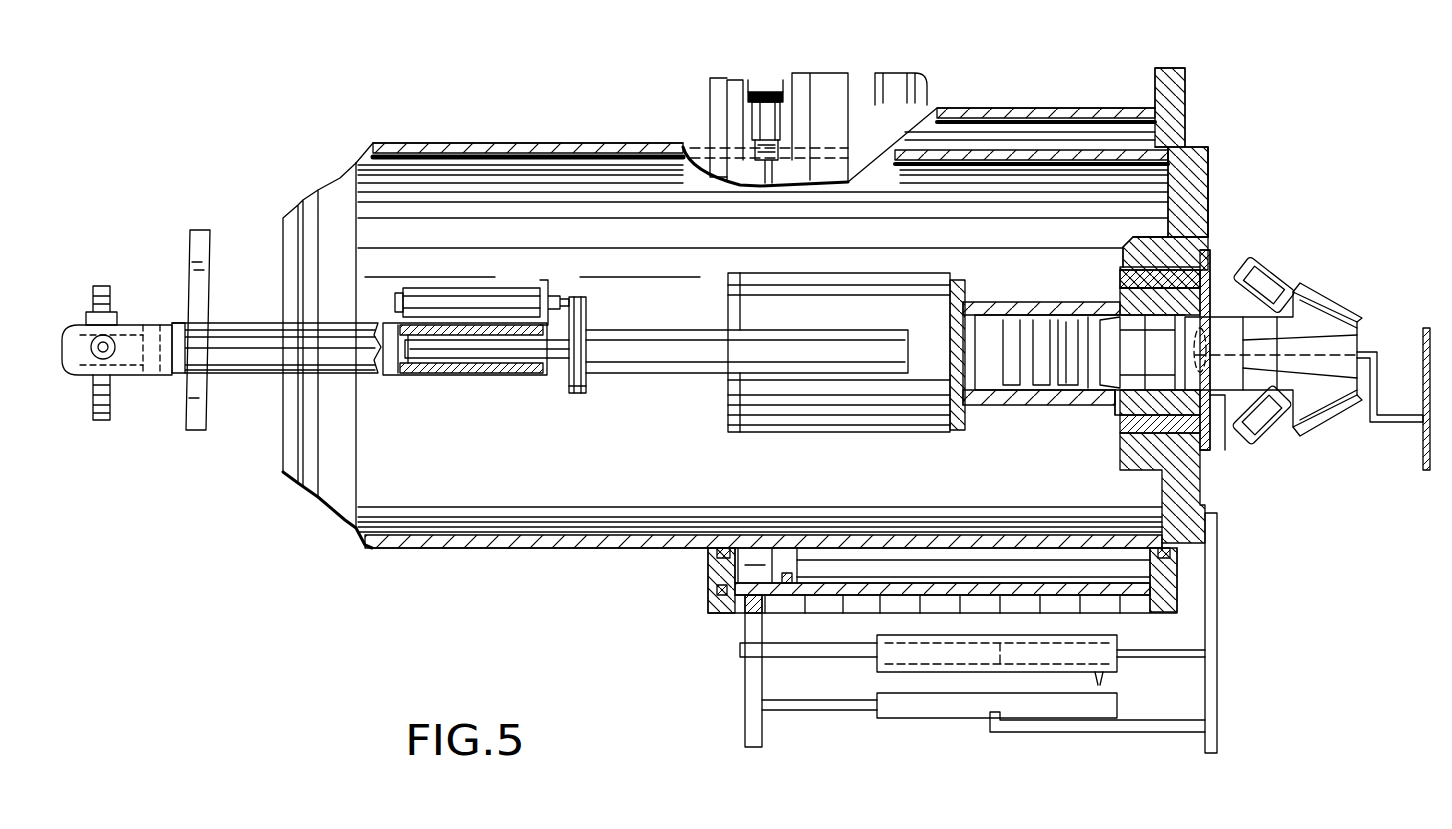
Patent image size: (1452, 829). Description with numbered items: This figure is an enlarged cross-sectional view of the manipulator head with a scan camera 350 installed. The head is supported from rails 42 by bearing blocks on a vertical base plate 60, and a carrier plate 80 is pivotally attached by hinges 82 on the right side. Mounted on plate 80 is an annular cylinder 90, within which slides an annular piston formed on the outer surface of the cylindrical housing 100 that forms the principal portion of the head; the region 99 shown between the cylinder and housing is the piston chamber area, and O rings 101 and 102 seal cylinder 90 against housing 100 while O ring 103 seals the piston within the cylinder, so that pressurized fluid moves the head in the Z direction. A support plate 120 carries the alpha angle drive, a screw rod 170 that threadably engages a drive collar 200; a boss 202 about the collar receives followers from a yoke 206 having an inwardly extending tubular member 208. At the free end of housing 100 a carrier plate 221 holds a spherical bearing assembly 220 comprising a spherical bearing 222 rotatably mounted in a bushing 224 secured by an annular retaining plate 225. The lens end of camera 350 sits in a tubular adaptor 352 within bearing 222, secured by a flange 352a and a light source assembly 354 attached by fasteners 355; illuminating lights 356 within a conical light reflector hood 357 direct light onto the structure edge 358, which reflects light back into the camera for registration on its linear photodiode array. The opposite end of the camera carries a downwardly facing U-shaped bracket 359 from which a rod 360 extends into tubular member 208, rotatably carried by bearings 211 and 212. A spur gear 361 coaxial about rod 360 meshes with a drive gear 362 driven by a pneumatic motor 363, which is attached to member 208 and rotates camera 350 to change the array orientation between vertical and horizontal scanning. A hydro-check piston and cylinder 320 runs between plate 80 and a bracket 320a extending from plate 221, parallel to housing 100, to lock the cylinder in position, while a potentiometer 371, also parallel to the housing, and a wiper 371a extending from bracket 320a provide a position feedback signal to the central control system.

The rails 42 is at (930, 82).
The vertical base plate 60 is at (830, 75).
The carrier plate 80 is at (740, 92).
The hinges 82 is at (770, 95).
The annular cylinder 90 is at (715, 118).
The slot 99 is at (790, 548).
The cylindrical housing 100 is at (443, 147).
The O ring 101 is at (712, 556).
The O ring 102 is at (1172, 556).
The O ring 103 is at (800, 572).
The support plate 120 is at (195, 250).
The screw rod 170 is at (106, 290).
The drive collar 200 is at (90, 320).
The boss 202 is at (88, 380).
The yoke 206 is at (136, 324).
The tubular member 208 is at (372, 323).
The bearing 211 is at (526, 377).
The bearings 212 is at (432, 377).
The spherical bearing assembly 220 is at (1258, 226).
The carrier plate 221 is at (1206, 180).
The spherical bearing 222 is at (1120, 282).
The bushing 224 is at (1126, 262).
The annular retaining plate 225 is at (1212, 280).
The hydro-check piston and cylinder 320 is at (1126, 646).
The bracket 320a is at (1215, 604).
The scan camera 350 is at (906, 282).
The tubular adaptor 352 is at (1010, 300).
The flange 352a is at (1113, 413).
The light source assembly 354 is at (1228, 450).
The fasteners 355 is at (1262, 268).
The illuminating lights 356 is at (1300, 305).
The light reflector hood 357 is at (1352, 320).
The structure edge 358 is at (1380, 364).
The U-shaped bracket 359 is at (650, 333).
The rod 360 is at (479, 372).
The spur gear 361 is at (580, 396).
The drive gear 362 is at (577, 296).
The pneumatic motor 363 is at (502, 292).
The potentiometer 371 is at (918, 720).
The wiper 371a is at (1058, 734).